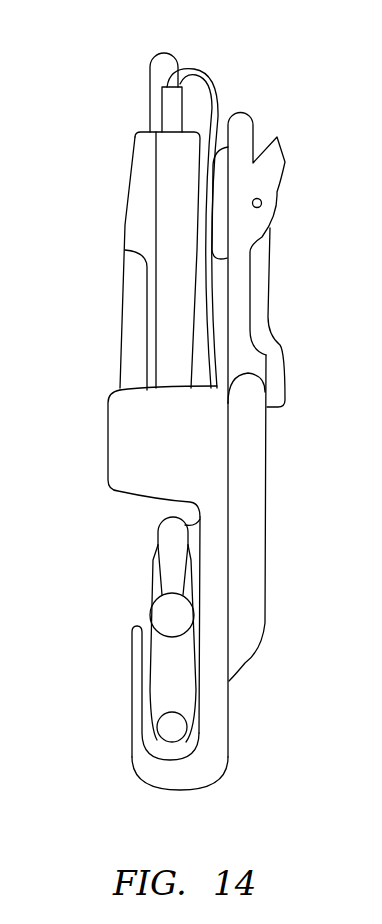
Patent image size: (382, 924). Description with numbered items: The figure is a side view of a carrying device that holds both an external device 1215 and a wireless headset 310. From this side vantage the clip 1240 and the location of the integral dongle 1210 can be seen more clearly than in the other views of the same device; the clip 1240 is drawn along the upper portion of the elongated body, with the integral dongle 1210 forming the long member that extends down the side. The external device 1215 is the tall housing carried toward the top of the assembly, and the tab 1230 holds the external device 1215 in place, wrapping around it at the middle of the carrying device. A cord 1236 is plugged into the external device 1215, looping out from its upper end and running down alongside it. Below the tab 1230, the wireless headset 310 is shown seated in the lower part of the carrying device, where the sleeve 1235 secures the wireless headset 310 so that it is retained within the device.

The wireless headset 310 is at (172, 615).
The integral dongle 1210 is at (247, 613).
The external device 1215 is at (135, 225).
The tab 1230 is at (133, 418).
The sleeve 1235 is at (132, 694).
The cord 1236 is at (220, 88).
The clip 1240 is at (273, 330).